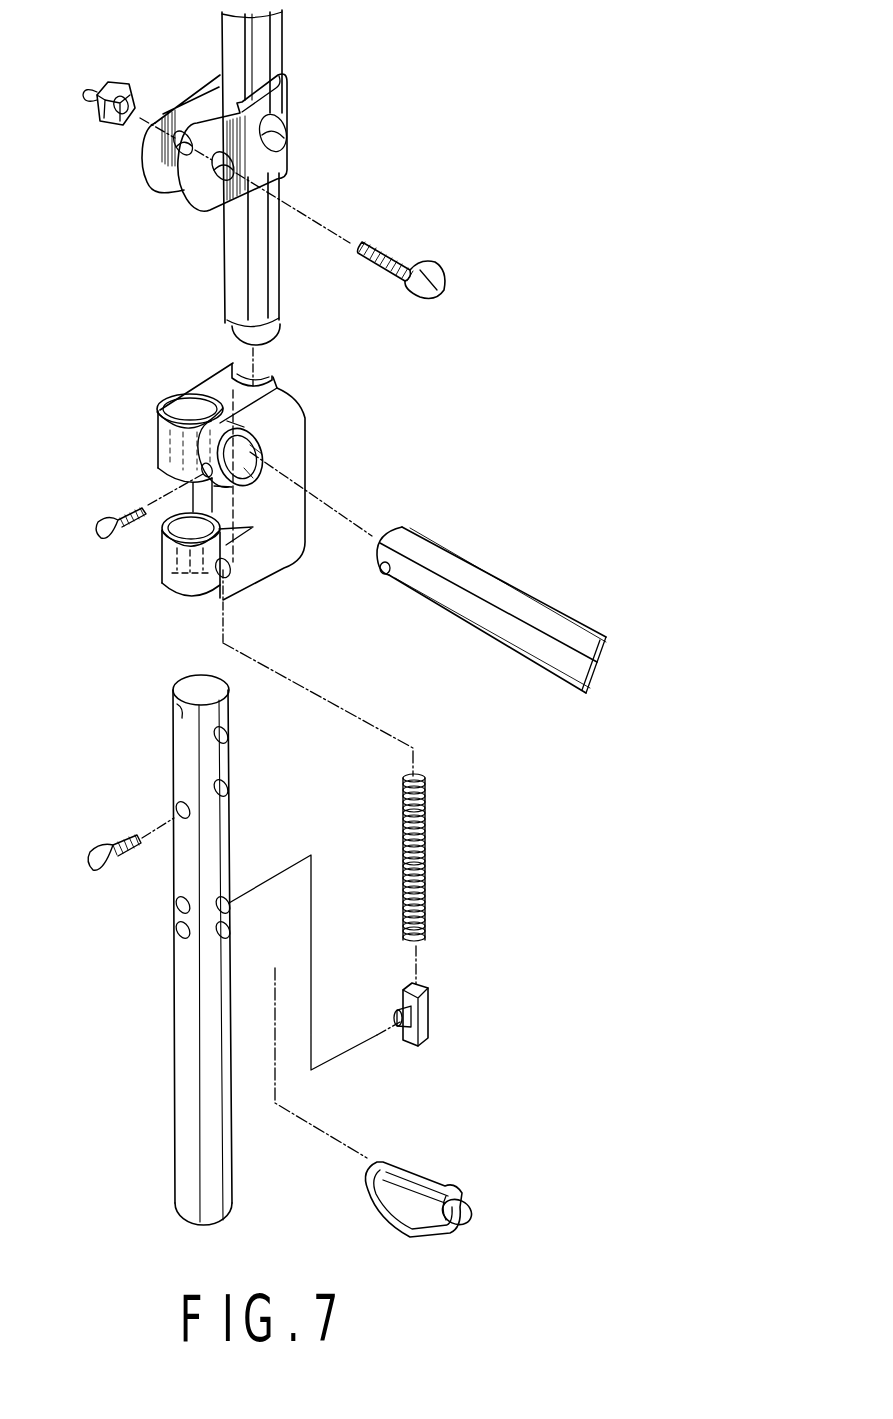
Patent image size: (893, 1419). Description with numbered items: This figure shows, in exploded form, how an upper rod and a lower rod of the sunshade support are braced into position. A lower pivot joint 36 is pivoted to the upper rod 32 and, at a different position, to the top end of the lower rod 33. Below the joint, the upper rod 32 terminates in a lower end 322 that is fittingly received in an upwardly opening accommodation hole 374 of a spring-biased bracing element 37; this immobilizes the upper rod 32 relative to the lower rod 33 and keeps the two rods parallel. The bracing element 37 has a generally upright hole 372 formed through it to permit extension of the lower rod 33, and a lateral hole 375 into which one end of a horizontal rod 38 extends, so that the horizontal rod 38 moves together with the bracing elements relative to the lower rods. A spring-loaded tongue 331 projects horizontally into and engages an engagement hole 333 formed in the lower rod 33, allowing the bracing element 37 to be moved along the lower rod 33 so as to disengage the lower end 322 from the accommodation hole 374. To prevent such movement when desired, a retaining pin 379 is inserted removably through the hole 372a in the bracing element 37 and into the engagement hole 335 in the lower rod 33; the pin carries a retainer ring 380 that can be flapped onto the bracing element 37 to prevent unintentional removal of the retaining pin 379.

The lower pivot joint 36 is at (288, 104).
The upper rod 32 is at (283, 280).
The lower end of the upper rod 322 is at (284, 323).
The spring-biased bracing element 37 is at (305, 432).
The upright hole 372 is at (205, 408).
The accommodation hole 374 is at (263, 387).
The lateral hole 375 is at (250, 455).
The hole 372a is at (232, 574).
The horizontal rod 38 is at (478, 577).
The lower rod 33 is at (231, 827).
The engagement hole 333 is at (229, 890).
The engagement hole 335 is at (229, 921).
The spring-loaded tongue 331 is at (430, 1017).
The retaining pin 379 is at (413, 1174).
The retainer ring 380 is at (378, 1227).